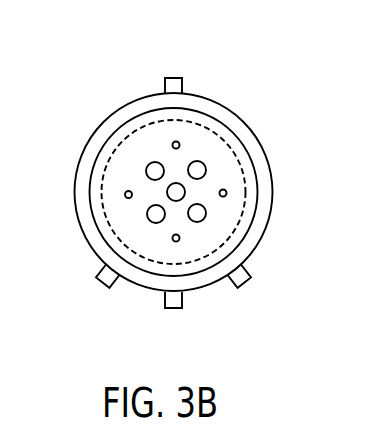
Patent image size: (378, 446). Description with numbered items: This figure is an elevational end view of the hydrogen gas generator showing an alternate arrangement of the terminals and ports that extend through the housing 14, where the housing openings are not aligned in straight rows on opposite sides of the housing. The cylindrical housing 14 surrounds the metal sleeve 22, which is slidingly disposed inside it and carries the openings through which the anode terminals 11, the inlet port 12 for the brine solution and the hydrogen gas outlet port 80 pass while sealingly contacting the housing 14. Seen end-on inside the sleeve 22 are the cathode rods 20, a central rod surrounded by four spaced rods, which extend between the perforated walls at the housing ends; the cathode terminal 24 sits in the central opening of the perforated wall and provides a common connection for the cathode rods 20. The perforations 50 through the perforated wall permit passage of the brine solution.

The anode terminal 11 is at (175, 83).
The inlet port 12 is at (244, 283).
The housing 14 is at (100, 138).
The cathode rod 20 is at (197, 170).
The metal sleeve 22 is at (147, 124).
The cathode terminal 24 is at (172, 191).
The perforation 50 is at (226, 192).
The hydrogen gas outlet port 80 is at (105, 283).